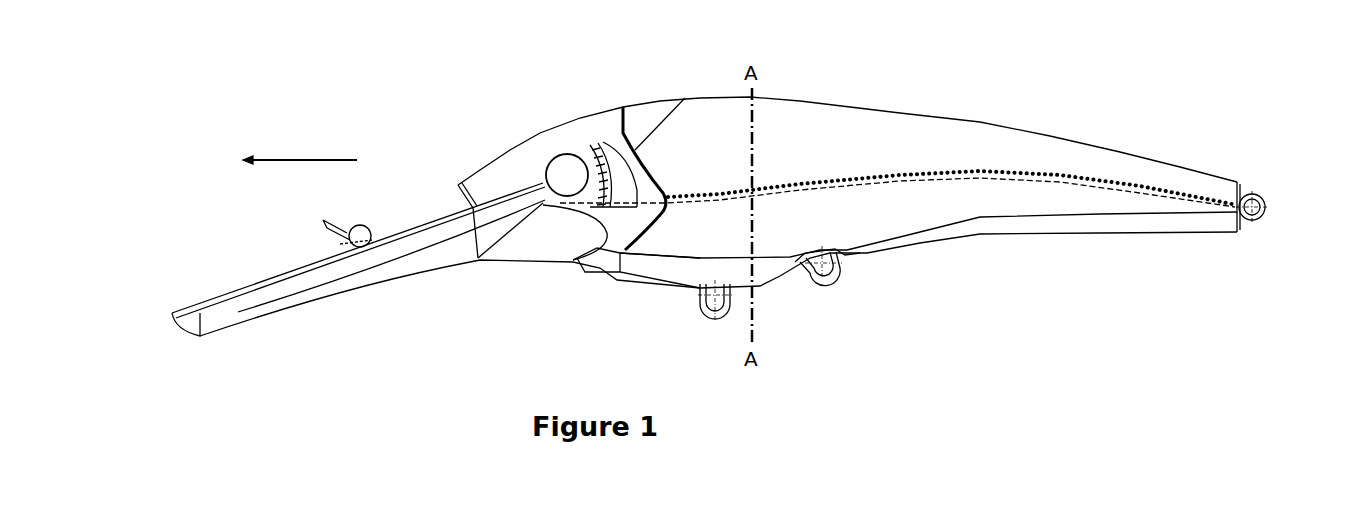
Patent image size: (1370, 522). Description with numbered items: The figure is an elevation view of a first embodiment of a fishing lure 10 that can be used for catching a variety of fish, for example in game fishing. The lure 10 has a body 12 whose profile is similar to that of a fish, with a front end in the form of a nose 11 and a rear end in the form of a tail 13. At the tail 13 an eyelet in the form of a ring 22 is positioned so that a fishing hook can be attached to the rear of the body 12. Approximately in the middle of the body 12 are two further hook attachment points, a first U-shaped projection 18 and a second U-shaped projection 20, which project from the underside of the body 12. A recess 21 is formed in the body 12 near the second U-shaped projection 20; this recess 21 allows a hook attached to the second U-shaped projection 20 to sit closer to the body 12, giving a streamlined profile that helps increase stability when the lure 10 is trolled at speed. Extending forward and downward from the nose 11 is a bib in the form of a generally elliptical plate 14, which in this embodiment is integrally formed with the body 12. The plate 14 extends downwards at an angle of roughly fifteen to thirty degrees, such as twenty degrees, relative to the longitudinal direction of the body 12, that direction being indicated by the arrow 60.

The fishing lure 10 is at (292, 98).
The nose 11 is at (477, 170).
The body 12 is at (855, 107).
The tail 13 is at (1213, 168).
The elliptical plate 14 is at (268, 272).
The first U-shaped projection 18 is at (705, 323).
The second U-shaped projection 20 is at (830, 287).
The recess 21 is at (850, 258).
The ring 22 is at (1262, 193).
The arrow 60 is at (316, 162).